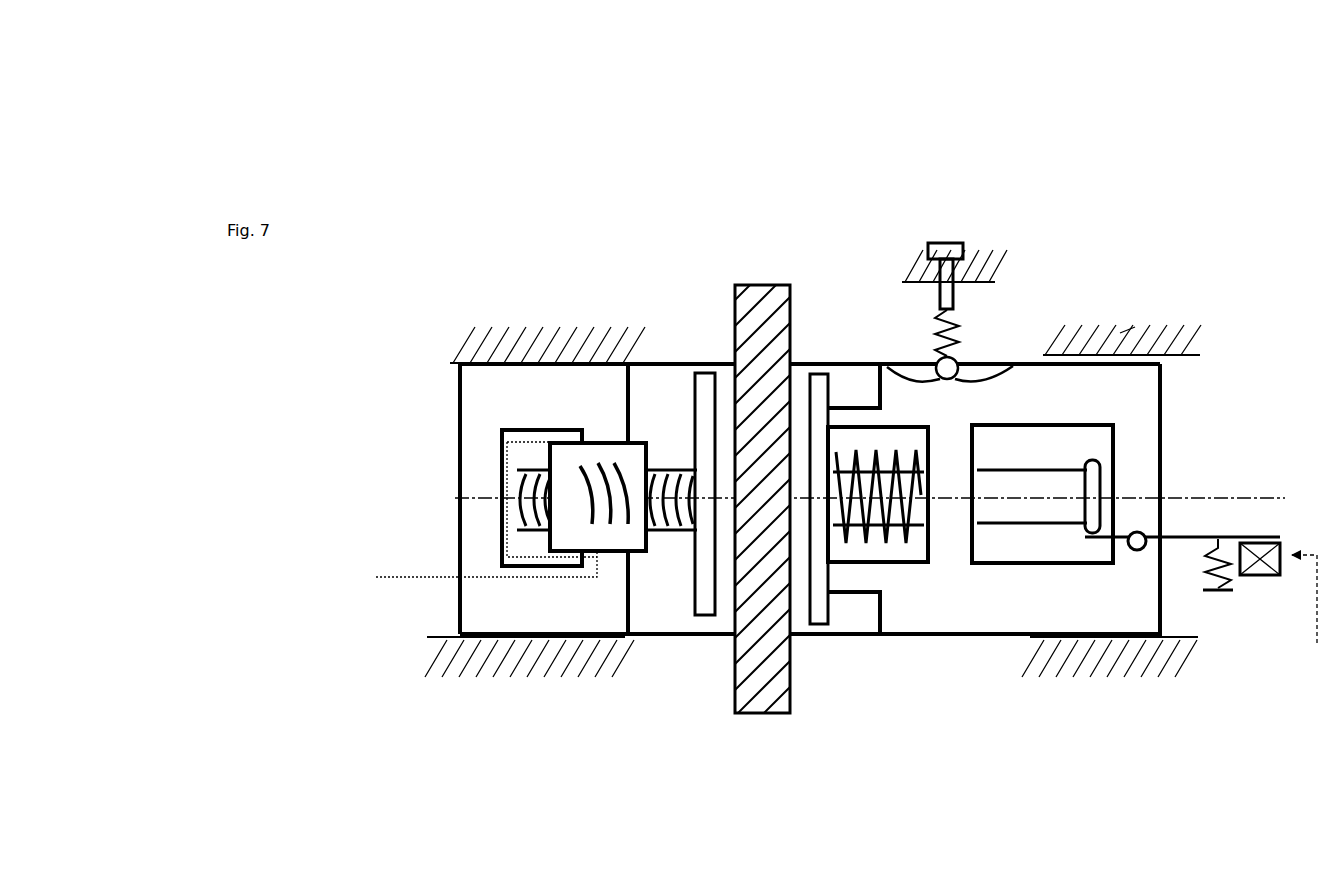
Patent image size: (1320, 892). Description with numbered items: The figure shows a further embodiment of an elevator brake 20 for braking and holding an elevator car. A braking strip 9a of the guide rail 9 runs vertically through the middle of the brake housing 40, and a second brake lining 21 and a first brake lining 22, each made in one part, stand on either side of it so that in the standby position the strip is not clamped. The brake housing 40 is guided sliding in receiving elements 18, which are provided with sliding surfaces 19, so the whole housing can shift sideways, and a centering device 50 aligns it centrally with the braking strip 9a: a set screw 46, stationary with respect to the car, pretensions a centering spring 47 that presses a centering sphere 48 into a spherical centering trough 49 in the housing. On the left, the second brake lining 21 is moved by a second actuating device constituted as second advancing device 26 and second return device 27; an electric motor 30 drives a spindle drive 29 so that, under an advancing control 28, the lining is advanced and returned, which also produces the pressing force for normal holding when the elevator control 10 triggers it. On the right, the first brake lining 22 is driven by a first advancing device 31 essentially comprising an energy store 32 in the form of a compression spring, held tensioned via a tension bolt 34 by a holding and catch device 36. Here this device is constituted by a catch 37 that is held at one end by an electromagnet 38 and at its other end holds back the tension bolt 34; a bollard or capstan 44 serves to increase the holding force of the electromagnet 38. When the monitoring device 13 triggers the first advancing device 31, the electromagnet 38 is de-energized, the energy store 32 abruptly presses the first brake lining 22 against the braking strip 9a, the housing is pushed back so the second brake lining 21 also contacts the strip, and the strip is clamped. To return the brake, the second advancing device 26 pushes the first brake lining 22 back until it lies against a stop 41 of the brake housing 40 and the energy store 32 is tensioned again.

The guide rail 9 is at (772, 453).
The braking strip 9a is at (778, 282).
The elevator control 10 is at (486, 511).
The monitoring device 13 is at (1304, 599).
The receiving element 18 is at (1120, 333).
The sliding surface 19 is at (490, 362).
The elevator brake 20 is at (441, 202).
The second brake lining 21 is at (707, 575).
The first brake lining 22 is at (820, 575).
The second advancing device 26 is at (623, 347).
The second return device 27 is at (647, 426).
The advancing control 28 is at (536, 436).
The spindle drive 29 is at (536, 436).
The electric motor 30 is at (536, 436).
The first advancing device 31 is at (970, 597).
The energy store 32 is at (881, 528).
The tension bolt 34 is at (1040, 500).
The holding and catch device 36 is at (1202, 571).
The catch 37 is at (1127, 497).
The electromagnet 38 is at (1278, 580).
The brake housing 40 is at (483, 413).
The stop 41 is at (840, 400).
The bollard or capstan 44 is at (1215, 596).
The set screw 46 is at (945, 242).
The centering spring 47 is at (958, 320).
The centering sphere 48 is at (975, 358).
The centering trough 49 is at (1000, 365).
The centering device 50 is at (1016, 213).